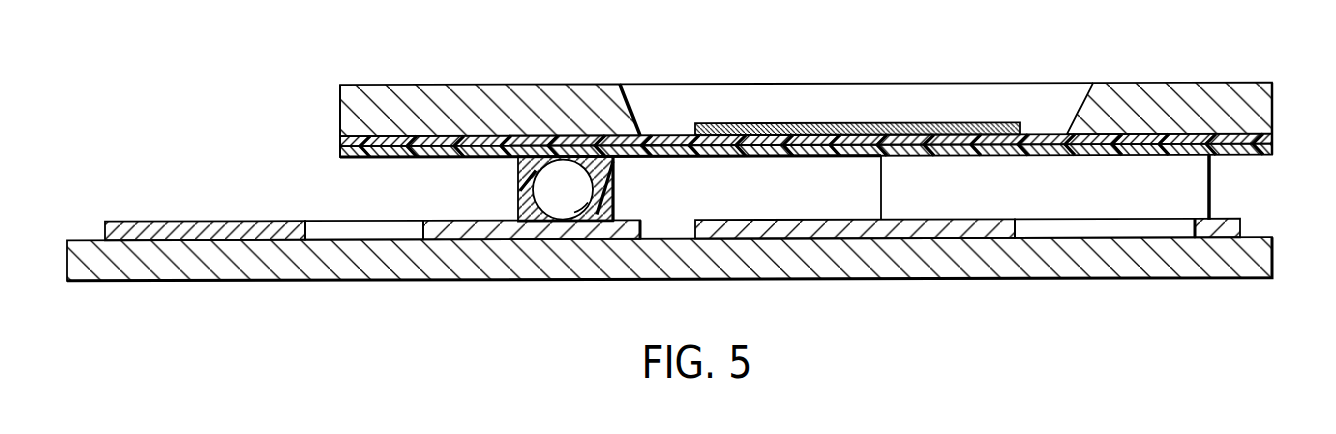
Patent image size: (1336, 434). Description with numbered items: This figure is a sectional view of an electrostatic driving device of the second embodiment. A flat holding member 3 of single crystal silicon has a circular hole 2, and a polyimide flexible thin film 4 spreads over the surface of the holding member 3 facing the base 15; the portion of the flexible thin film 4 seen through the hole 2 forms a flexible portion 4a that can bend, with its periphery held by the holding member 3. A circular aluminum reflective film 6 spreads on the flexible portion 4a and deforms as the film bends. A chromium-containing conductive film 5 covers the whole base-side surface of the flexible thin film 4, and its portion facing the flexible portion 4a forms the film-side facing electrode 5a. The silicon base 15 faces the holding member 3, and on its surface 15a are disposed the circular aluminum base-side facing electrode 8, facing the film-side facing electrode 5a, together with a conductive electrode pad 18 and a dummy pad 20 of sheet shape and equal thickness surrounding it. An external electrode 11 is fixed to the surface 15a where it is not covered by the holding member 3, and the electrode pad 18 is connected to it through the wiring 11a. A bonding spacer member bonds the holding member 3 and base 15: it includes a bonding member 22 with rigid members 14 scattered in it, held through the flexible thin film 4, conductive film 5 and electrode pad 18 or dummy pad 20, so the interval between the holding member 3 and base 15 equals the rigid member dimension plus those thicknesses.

The circular hole 2 is at (776, 96).
The holding member 3 is at (475, 100).
The flexible thin film 4 is at (340, 143).
The flexible portion 4a is at (653, 137).
The conductive film 5 is at (338, 157).
The film-side facing electrode 5a is at (788, 161).
The reflective film 6 is at (879, 131).
The base-side facing electrode 8 is at (853, 229).
The external electrode 11 is at (119, 223).
The wiring 11a is at (339, 221).
The rigid members 14 is at (563, 207).
The base 15 is at (1247, 260).
The surface of the base 15a is at (1258, 237).
The electrode pad 18 is at (636, 223).
The dummy pad 20 is at (1093, 229).
The bonding member 22 is at (518, 192).